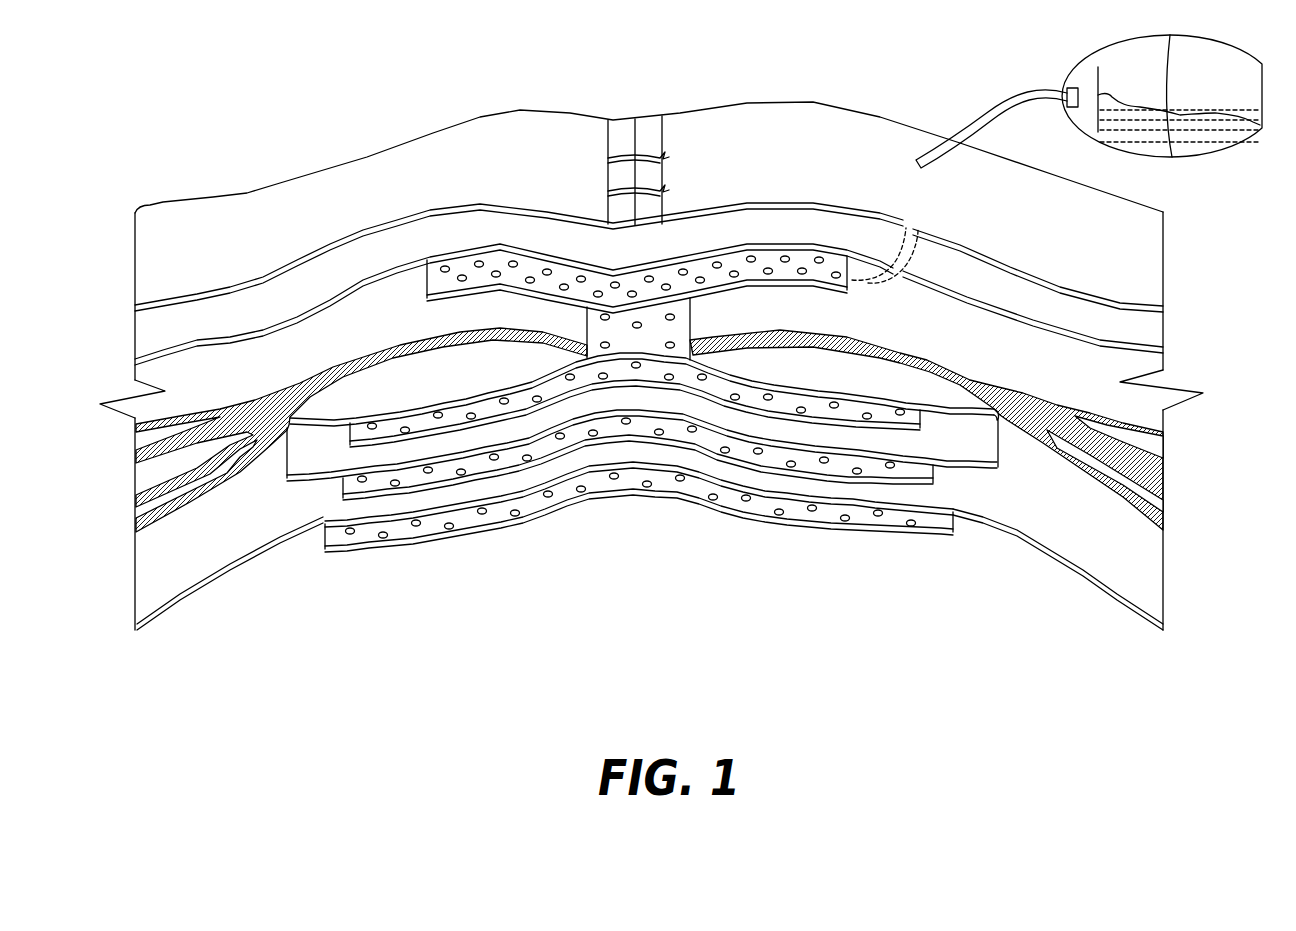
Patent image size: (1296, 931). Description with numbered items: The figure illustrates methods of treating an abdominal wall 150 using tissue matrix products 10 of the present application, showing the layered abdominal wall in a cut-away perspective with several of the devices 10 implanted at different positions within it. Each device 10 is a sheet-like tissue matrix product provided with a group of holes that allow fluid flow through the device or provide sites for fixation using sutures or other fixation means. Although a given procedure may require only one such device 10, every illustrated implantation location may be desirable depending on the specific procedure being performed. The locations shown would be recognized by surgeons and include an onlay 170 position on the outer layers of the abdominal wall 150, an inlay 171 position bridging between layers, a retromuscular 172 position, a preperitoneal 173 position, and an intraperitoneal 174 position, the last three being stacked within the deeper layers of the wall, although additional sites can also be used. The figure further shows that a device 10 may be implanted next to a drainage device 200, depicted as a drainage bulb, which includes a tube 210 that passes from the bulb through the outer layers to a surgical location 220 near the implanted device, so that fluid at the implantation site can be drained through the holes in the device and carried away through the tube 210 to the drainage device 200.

The abdominal wall 150 is at (218, 175).
The onlay 170 is at (447, 280).
The inlay 171 is at (636, 335).
The retromuscular 172 is at (890, 428).
The preperitoneal 173 is at (811, 473).
The intraperitoneal 174 is at (757, 517).
The tissue matrix product 10 is at (806, 266).
The drainage device 200 is at (1233, 153).
The supply tube 210 is at (1033, 110).
The surgical location 220 is at (910, 243).